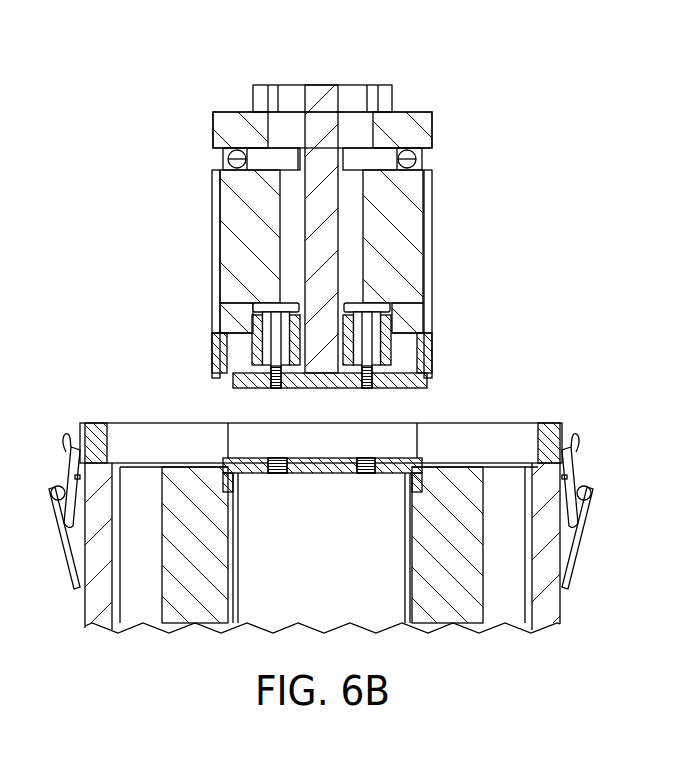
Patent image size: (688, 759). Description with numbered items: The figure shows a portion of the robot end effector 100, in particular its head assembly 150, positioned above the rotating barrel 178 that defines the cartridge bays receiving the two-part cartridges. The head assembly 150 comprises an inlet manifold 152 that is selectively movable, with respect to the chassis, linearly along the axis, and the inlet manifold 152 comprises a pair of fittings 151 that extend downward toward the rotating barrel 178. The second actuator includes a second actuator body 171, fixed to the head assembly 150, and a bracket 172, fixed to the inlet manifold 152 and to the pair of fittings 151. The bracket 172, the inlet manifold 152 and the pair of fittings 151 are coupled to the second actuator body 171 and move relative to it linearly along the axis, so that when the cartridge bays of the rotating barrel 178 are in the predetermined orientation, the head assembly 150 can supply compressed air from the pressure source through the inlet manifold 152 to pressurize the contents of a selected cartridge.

The robot end effector 100 is at (142, 130).
The head assembly 150 is at (407, 215).
The pair of fittings 151 is at (415, 381).
The inlet manifold 152 is at (405, 356).
The second actuator body 171 is at (238, 252).
The bracket 172 is at (410, 120).
The rotating barrel 178 is at (468, 612).